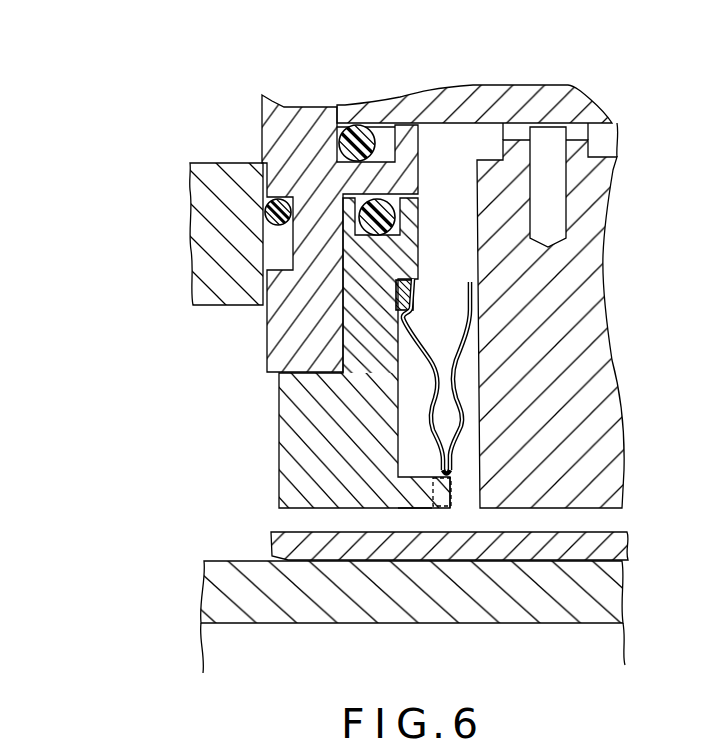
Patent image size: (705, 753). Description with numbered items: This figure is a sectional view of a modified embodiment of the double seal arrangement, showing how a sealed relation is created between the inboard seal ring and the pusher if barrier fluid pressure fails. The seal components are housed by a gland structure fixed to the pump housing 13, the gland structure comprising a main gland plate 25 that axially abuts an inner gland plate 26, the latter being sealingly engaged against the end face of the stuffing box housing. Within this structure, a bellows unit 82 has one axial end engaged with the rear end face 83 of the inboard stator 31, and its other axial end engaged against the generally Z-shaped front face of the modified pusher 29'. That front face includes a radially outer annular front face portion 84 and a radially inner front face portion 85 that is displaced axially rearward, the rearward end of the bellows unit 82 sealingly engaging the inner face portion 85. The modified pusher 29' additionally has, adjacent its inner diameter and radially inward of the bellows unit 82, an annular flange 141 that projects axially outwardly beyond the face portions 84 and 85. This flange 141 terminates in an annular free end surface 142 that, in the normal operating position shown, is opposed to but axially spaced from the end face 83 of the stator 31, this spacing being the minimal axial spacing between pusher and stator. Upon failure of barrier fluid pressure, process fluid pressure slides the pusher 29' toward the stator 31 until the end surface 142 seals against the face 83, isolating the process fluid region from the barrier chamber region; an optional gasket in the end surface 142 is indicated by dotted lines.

The housing 13 is at (200, 198).
The main gland plate 25 is at (483, 104).
The inner gland plate 26 is at (270, 123).
The modified pusher 29' is at (308, 353).
The inboard stator 31 is at (577, 300).
The bellows unit 82 is at (428, 408).
The rear end face 83 is at (479, 478).
The radially outer annular front face portion 84 is at (422, 268).
The radially inner front face portion 85 is at (405, 447).
The annular flange 141 is at (405, 498).
The annular free end surface 142 is at (454, 508).